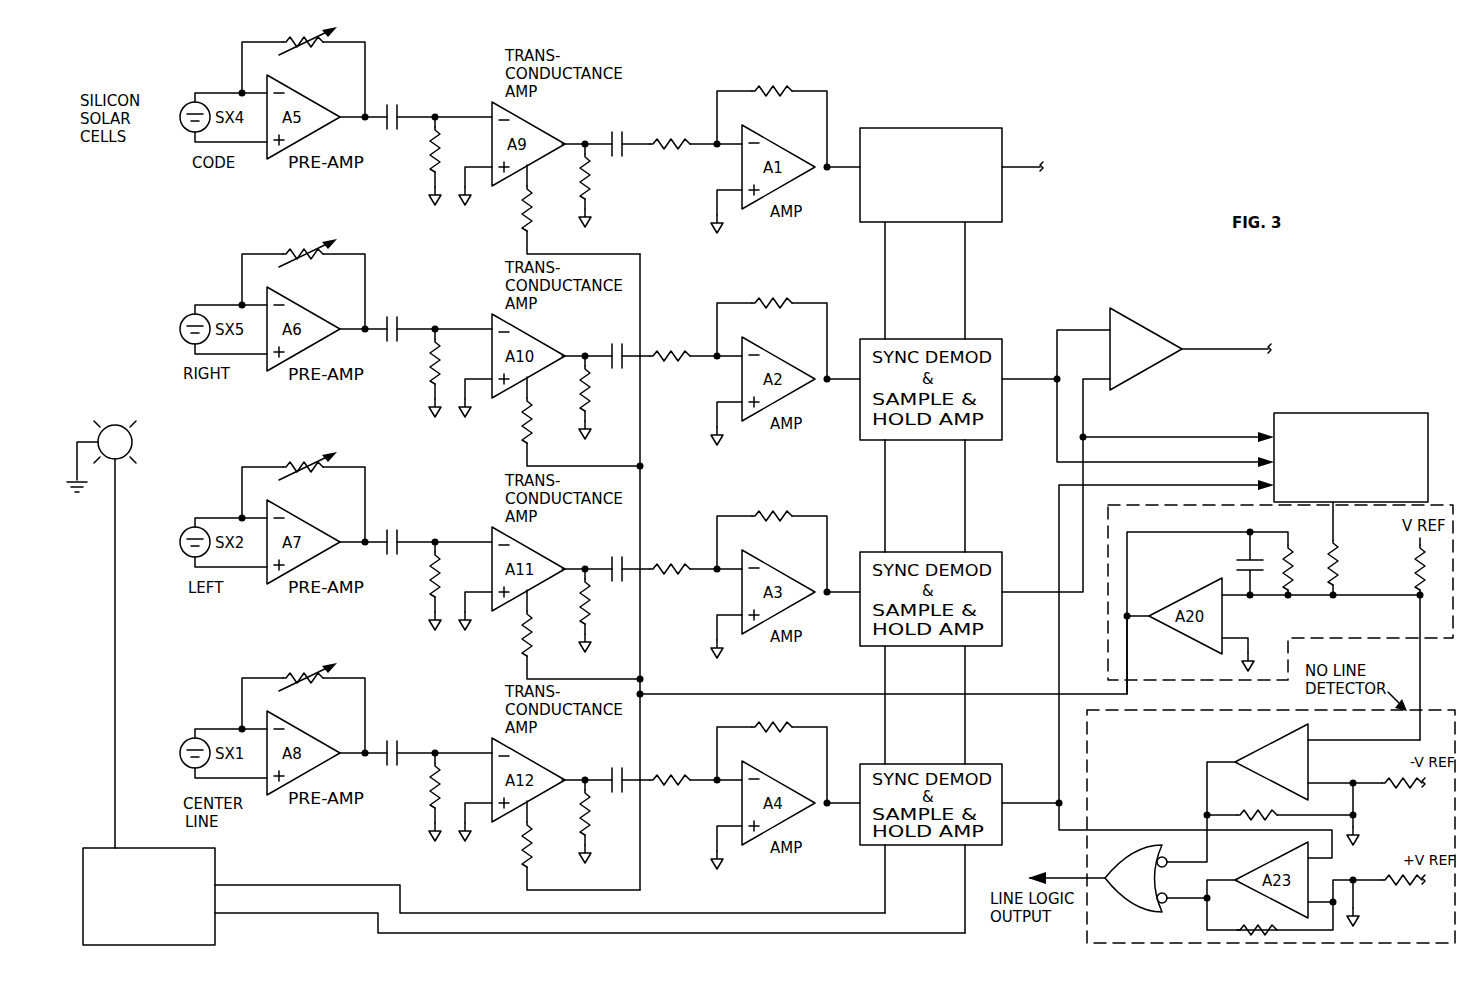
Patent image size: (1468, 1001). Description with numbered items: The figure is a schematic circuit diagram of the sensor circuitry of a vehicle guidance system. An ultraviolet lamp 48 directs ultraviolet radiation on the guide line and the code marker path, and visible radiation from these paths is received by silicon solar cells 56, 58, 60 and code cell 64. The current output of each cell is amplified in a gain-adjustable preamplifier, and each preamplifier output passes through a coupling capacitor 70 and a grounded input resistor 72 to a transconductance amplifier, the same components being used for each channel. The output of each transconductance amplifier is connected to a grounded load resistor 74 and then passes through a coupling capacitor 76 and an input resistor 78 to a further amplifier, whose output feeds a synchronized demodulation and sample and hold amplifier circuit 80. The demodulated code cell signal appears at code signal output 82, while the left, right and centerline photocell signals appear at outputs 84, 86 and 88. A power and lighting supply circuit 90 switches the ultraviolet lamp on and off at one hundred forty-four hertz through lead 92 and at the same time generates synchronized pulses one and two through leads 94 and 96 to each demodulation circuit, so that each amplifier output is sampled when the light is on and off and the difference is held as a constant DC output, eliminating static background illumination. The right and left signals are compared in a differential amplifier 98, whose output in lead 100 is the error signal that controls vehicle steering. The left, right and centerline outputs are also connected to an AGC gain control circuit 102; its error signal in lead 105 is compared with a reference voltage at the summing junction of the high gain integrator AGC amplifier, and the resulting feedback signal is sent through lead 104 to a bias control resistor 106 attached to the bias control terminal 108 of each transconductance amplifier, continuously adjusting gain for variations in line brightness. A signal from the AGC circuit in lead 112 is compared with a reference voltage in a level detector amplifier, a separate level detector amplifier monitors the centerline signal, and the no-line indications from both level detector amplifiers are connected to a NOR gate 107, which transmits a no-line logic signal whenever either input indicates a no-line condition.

The ultraviolet lamp 48 is at (134, 441).
The silicon solar cell 56 is at (183, 528).
The silicon solar cell 58 is at (182, 315).
The silicon solar cell 60 is at (191, 740).
The code cell 64 is at (187, 132).
The coupling capacitor 70 is at (403, 104).
The grounded input resistor 72 is at (430, 153).
The grounded load resistor 74 is at (588, 178).
The coupling capacitor 76 is at (623, 131).
The input resistor 78 is at (673, 139).
The synchronized demodulation and sample and hold amplifier circuit 80 is at (945, 128).
The code signal output 82 is at (1026, 160).
The left photocell output 84 is at (1026, 589).
The right photocell output 86 is at (1027, 377).
The centerline photocell output 88 is at (1025, 801).
The power and lighting supply circuit 90 is at (140, 848).
The lead 92 is at (120, 679).
The lead 94 is at (443, 912).
The lead 96 is at (478, 932).
The differential amplifier 98 is at (1162, 338).
The lead 100 is at (1236, 346).
The AGC gain control circuit 102 is at (1343, 412).
The lead 104 is at (752, 693).
The lead 105 is at (1330, 527).
The bias control resistor 106 is at (523, 215).
The NOR gate 107 is at (1119, 861).
The bias control terminal 108 is at (532, 173).
The lead 112 is at (1367, 740).